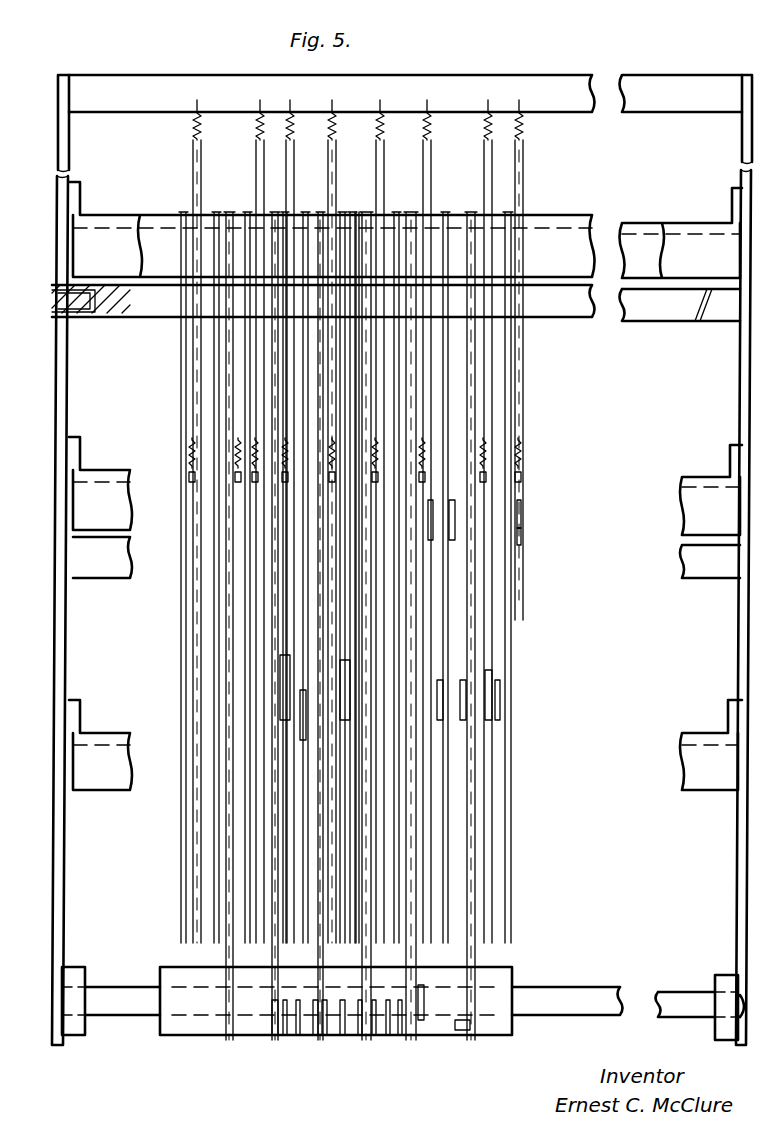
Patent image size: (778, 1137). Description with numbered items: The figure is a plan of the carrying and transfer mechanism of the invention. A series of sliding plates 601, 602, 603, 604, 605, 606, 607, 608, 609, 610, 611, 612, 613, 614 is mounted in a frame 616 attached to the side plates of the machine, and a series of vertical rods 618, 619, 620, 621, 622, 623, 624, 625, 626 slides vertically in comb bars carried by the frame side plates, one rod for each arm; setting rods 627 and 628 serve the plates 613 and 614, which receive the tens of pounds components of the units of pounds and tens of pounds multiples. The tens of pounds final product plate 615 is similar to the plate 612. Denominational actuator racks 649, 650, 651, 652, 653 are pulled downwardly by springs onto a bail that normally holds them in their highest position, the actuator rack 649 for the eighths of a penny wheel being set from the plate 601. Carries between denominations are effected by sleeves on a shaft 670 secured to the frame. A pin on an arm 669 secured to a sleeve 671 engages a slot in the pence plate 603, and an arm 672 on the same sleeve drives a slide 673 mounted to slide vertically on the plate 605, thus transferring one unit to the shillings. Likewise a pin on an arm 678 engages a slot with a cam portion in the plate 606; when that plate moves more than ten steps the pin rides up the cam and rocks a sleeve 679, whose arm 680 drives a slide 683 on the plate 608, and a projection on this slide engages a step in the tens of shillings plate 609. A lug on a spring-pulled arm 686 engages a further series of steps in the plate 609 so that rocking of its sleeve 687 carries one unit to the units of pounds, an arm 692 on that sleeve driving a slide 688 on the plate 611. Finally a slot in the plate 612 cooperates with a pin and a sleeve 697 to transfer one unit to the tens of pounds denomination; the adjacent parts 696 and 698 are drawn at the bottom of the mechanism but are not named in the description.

The sliding plate 601 is at (510, 864).
The sliding plate 602 is at (494, 828).
The pence plate 603 is at (492, 690).
The sliding plate 604 is at (440, 625).
The sliding plate 605 is at (432, 446).
The sliding plate 606 is at (432, 432).
The sliding plate 607 is at (440, 402).
The sliding plate 608 is at (415, 390).
The tens of shillings plate 609 is at (420, 420).
The sliding plate 610 is at (380, 398).
The sliding plate 611 is at (405, 388).
The sliding plate 612 is at (380, 368).
The sliding plate 613 is at (330, 363).
The sliding plate 614 is at (305, 350).
The tens of pounds final product plate 615 is at (350, 598).
The frame 616 is at (70, 632).
The vertical rod 618 is at (522, 513).
The vertical rod 619 is at (522, 538).
The vertical rod 620 is at (500, 710).
The vertical rod 621 is at (450, 540).
The vertical rod 622 is at (466, 716).
The vertical rod 623 is at (455, 492).
The vertical rod 624 is at (340, 742).
The vertical rod 625 is at (355, 658).
The vertical rod 626 is at (335, 725).
The setting rod 627 is at (290, 558).
The setting rod 628 is at (345, 700).
The actuator rack 649 is at (517, 215).
The denominational actuator rack 650 is at (470, 240).
The denominational actuator rack 651 is at (378, 215).
The denominational actuator rack 652 is at (370, 215).
The denominational actuator rack 653 is at (330, 215).
The arm 669 is at (470, 958).
The shaft 670 is at (590, 995).
The sleeve 671 is at (458, 1024).
The arm 672 is at (422, 1003).
The slide 673 is at (415, 612).
The arm 678 is at (400, 1037).
The sleeve 679 is at (390, 1037).
The arm 680 is at (375, 1037).
The slide 683 is at (365, 638).
The arm 686 is at (362, 1037).
The sleeve 687 is at (350, 1034).
The slide 688 is at (375, 612).
The arm 692 is at (318, 1040).
The rod end 696 is at (300, 1040).
The sleeve 697 is at (287, 1037).
The rod end 698 is at (275, 1037).